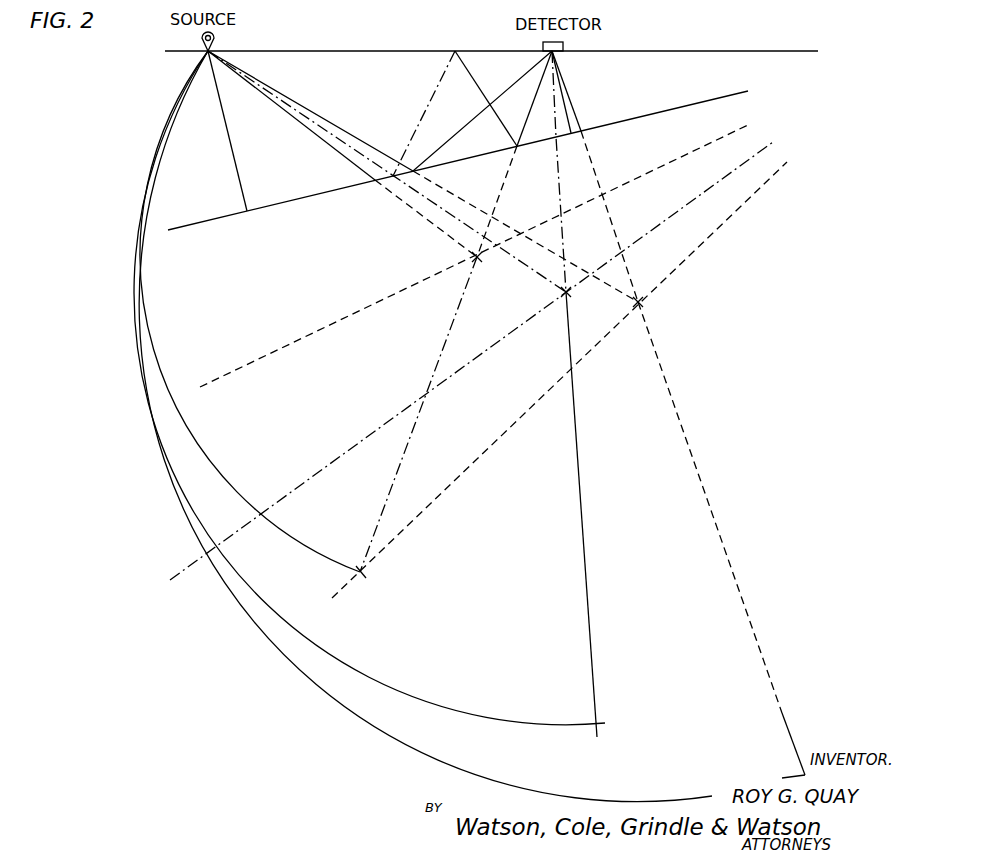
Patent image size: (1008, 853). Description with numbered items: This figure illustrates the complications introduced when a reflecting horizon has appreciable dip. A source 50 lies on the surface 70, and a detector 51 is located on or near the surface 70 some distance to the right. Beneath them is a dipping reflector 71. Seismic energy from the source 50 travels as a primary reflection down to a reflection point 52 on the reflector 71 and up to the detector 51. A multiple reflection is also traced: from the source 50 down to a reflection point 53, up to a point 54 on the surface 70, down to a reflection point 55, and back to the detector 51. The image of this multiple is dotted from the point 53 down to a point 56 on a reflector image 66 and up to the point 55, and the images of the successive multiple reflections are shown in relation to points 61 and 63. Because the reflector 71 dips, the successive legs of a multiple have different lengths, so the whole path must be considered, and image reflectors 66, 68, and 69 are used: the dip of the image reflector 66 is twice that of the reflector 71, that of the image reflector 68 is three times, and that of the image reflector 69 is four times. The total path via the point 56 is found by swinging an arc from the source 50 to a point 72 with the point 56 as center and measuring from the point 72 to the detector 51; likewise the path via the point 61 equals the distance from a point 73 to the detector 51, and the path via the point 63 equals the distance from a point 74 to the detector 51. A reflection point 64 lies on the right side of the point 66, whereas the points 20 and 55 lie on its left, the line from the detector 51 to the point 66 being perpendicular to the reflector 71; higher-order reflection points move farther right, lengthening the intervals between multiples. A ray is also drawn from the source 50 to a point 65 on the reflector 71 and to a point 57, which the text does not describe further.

The point 20 is at (556, 139).
The source 50 is at (216, 38).
The detector 51 is at (564, 46).
The reflection point 52 is at (413, 170).
The reflection point 53 is at (375, 181).
The point 54 is at (455, 51).
The reflection point 55 is at (517, 148).
The point 56 is at (476, 257).
The reflection point 57 is at (393, 177).
The point 61 is at (567, 292).
The point 63 is at (639, 302).
The reflection point 64 is at (582, 132).
The reflection point 65 is at (247, 211).
The image reflector 66 is at (572, 135).
The image reflector 68 is at (712, 191).
The image reflector 69 is at (726, 228).
The surface 70 is at (670, 48).
The reflector 71 is at (673, 104).
The point 72 is at (360, 572).
The point 73 is at (597, 724).
The point 74 is at (803, 772).